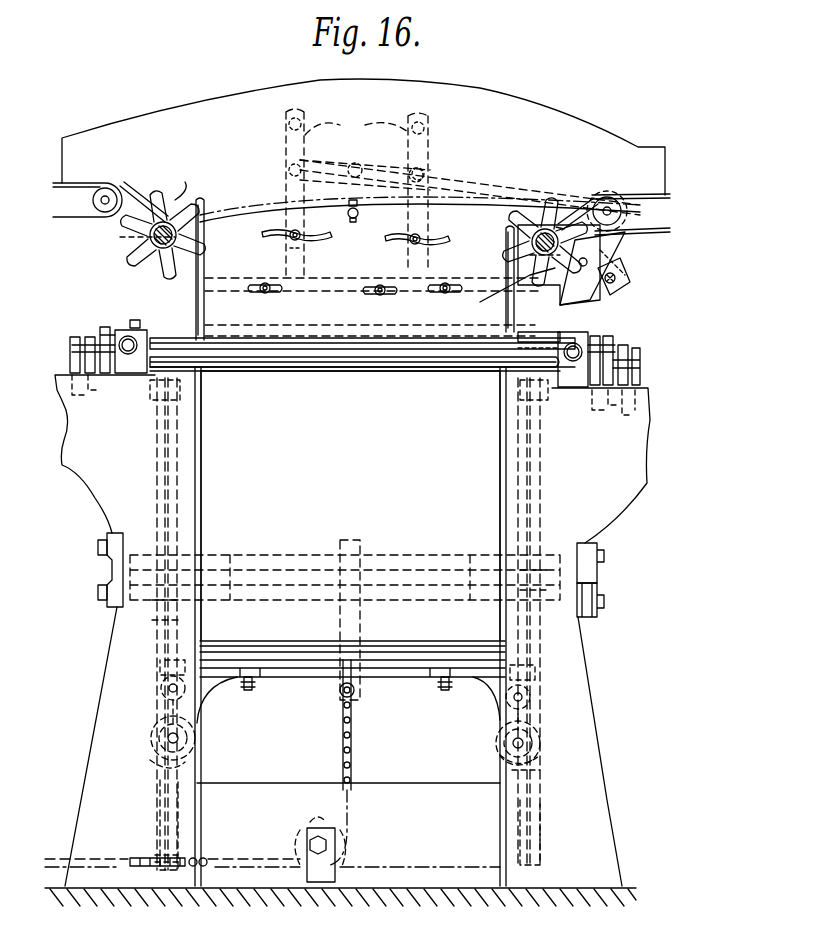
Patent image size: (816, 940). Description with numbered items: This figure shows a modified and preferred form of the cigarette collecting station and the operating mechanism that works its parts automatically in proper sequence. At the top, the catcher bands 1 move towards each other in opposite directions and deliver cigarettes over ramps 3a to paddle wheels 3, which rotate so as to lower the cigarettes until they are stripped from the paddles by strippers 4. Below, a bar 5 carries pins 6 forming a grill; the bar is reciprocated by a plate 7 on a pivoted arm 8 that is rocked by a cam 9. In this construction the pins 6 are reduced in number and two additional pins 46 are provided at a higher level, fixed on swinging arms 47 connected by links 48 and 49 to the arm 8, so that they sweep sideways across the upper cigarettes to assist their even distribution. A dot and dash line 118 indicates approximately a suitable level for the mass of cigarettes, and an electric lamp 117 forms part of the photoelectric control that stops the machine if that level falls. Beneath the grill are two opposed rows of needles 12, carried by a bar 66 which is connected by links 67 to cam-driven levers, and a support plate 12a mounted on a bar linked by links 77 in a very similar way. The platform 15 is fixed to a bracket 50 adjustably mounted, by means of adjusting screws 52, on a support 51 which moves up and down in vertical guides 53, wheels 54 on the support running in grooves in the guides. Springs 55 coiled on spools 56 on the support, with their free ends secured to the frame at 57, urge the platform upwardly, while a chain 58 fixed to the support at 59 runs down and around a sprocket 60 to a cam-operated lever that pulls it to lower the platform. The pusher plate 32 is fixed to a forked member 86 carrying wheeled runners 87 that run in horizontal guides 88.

The bands 1 is at (652, 228).
The paddle wheels 3 is at (192, 200).
The ramps 3a is at (575, 202).
The strippers 4 is at (205, 256).
The bar 5 is at (400, 276).
The pins 6 is at (263, 294).
The plate 7 is at (513, 285).
The pivoted arm 8 is at (578, 295).
The cam 9 is at (622, 266).
The needles 12 is at (330, 340).
The support plate 12a is at (440, 362).
The platform 15 is at (412, 660).
The pusher plate 32 is at (350, 505).
The additional pins 46 is at (300, 244).
The swinging arms 47 is at (357, 192).
The link 48 is at (395, 160).
The link 49 is at (482, 190).
The bracket 50 is at (292, 645).
The support 51 is at (490, 680).
The adjusting screws 52 is at (255, 690).
The vertical guides 53 is at (157, 814).
The wheels 54 is at (182, 735).
The springs 55 is at (157, 627).
The spools 56 is at (185, 775).
The frame securing point 57 is at (530, 400).
The chain 58 is at (356, 720).
The chain fixing point 59 is at (340, 688).
The sprocket 60 is at (318, 822).
The bar 66 is at (530, 338).
The links 67 is at (603, 345).
The links 77 is at (628, 345).
The forked member 86 is at (444, 560).
The wheeled runners 87 is at (597, 583).
The horizontal guides 88 is at (596, 550).
The electric lamp 117 is at (362, 215).
The dot and dash line 118 is at (262, 205).